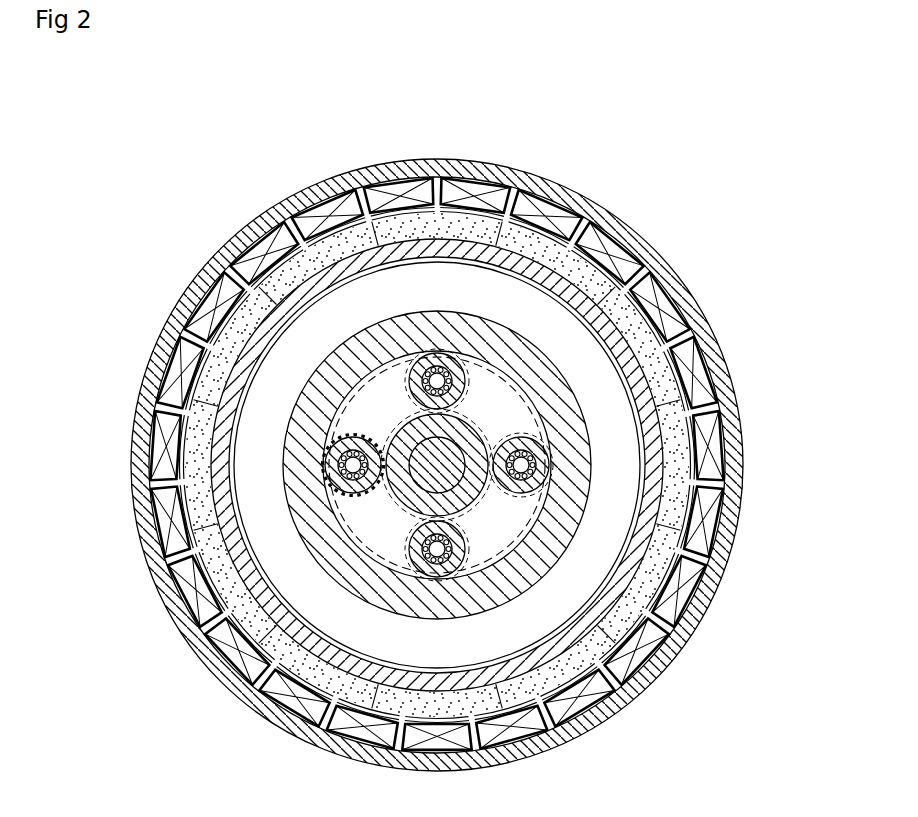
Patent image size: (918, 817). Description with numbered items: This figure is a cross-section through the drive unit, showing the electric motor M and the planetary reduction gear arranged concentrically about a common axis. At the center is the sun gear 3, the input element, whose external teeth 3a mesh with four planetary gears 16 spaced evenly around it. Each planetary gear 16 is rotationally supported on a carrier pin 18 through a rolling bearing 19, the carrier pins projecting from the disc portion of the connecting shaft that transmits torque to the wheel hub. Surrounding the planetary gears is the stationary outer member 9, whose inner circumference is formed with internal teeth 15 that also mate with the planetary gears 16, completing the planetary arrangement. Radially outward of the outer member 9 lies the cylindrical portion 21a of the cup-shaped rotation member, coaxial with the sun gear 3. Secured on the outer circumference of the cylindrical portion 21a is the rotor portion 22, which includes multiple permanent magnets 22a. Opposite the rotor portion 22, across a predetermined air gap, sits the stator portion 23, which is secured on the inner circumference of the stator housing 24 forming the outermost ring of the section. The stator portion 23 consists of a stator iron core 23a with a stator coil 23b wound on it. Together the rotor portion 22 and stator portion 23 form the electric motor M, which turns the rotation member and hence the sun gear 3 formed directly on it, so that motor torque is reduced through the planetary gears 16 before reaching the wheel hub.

The sun gear 3 is at (453, 471).
The external teeth 3a is at (385, 497).
The outer member 9 is at (572, 457).
The internal teeth 15 is at (512, 400).
The planetary gear 16 is at (453, 379).
The carrier pin 18 is at (690, 476).
The rolling bearing 19 is at (439, 379).
The cylindrical portion 21a is at (660, 483).
The rotor portion 22 is at (678, 412).
The permanent magnet 22a is at (185, 456).
The stator portion 23 is at (670, 310).
The stator iron core 23a is at (236, 287).
The stator coil 23b is at (259, 262).
The stator housing 24 is at (733, 433).
The electric motor M is at (780, 256).